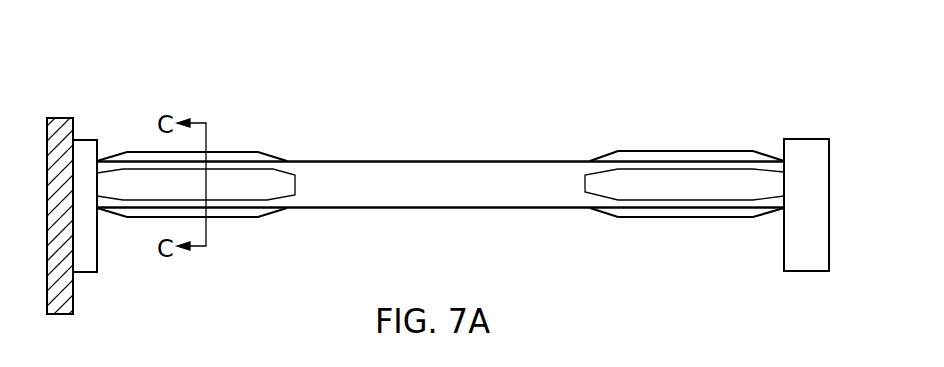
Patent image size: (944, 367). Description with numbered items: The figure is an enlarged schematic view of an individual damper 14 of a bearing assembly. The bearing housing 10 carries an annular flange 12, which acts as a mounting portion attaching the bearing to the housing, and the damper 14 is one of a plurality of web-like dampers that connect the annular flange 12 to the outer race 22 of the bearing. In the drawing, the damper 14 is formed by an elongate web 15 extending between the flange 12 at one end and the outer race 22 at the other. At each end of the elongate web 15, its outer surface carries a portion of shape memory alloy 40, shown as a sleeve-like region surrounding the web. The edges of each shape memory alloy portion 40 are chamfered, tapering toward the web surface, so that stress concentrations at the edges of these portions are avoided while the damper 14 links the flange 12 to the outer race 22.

The bearing housing 10 is at (62, 118).
The annular flange 12 is at (88, 148).
The damper 14 is at (459, 72).
The elongate web 15 is at (418, 182).
The outer race 22 is at (810, 148).
The shape memory alloy portion 40 is at (272, 177).